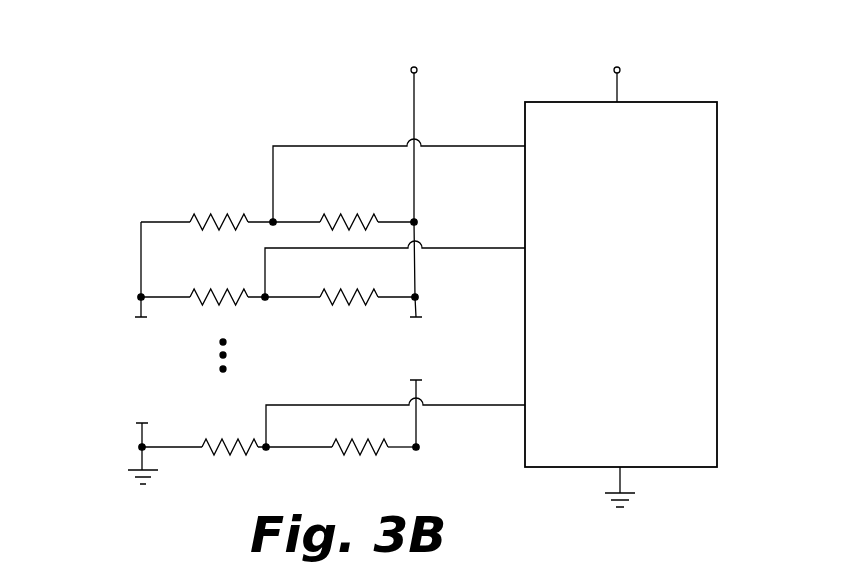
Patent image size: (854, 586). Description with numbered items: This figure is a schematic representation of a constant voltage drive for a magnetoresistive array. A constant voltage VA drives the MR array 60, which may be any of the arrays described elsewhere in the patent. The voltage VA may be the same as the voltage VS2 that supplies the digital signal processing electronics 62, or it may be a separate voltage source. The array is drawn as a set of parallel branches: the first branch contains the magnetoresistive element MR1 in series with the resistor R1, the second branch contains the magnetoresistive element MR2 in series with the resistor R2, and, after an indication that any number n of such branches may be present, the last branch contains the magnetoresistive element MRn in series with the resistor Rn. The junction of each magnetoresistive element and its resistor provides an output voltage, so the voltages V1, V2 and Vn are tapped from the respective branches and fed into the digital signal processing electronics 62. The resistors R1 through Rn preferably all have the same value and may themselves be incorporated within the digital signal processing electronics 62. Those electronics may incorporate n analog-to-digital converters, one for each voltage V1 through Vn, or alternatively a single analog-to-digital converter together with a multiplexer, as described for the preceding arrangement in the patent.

The MR array 60 is at (140, 251).
The digital signal processing electronics 62 is at (686, 102).
The constant voltage VA is at (417, 180).
The voltage VS2 is at (619, 72).
The magnetoresistive element MR1 is at (219, 205).
The resistor R1 is at (349, 205).
The voltage V1 is at (399, 167).
The magnetoresistive element MR2 is at (219, 281).
The resistor R2 is at (349, 312).
The voltage V2 is at (395, 257).
The magnetoresistive element MRn is at (230, 430).
The resistor Rn is at (360, 430).
The voltage Vn is at (395, 410).